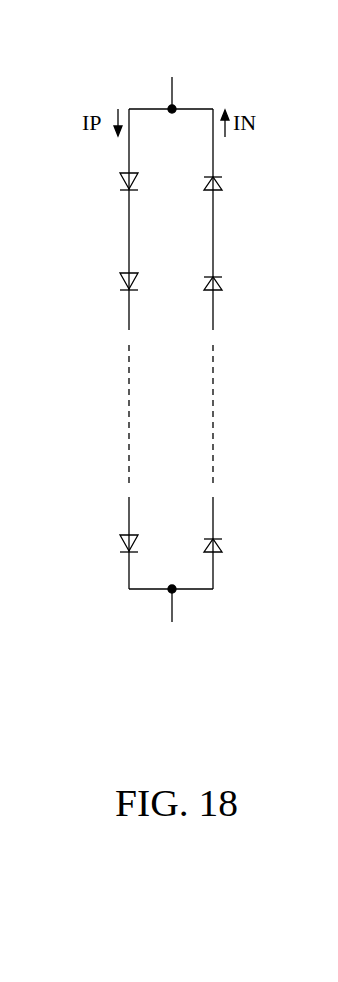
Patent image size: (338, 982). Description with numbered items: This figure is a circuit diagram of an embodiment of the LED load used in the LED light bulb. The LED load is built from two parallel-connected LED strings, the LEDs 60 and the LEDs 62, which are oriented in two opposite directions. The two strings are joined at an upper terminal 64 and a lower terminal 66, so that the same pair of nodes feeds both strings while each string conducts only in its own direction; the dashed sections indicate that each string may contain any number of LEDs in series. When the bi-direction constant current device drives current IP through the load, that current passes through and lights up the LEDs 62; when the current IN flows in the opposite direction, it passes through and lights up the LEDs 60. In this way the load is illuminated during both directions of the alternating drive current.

The LEDs 60 is at (222, 181).
The LEDs 62 is at (120, 186).
The first node / terminal 64 is at (173, 92).
The second node / terminal 66 is at (173, 607).